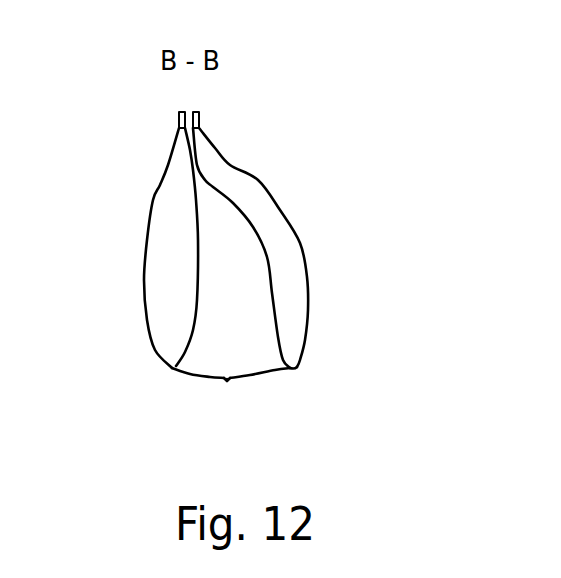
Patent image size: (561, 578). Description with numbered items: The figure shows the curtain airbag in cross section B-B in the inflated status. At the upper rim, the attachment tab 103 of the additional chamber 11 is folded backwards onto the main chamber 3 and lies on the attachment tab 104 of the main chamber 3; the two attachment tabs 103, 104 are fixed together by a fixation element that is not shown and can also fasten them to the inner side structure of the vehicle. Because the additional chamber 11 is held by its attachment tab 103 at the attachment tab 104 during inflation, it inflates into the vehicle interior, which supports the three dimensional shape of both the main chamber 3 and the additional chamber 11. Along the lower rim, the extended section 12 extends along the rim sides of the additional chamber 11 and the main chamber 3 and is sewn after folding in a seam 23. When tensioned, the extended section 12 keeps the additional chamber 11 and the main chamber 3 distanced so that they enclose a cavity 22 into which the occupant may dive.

The main chamber 3 is at (160, 242).
The additional chamber 11 is at (270, 210).
The extended section 12 is at (260, 377).
The cavity 22 is at (252, 307).
The seam 23 is at (228, 380).
The attachment tab 103 is at (200, 122).
The attachment tab 104 is at (177, 122).